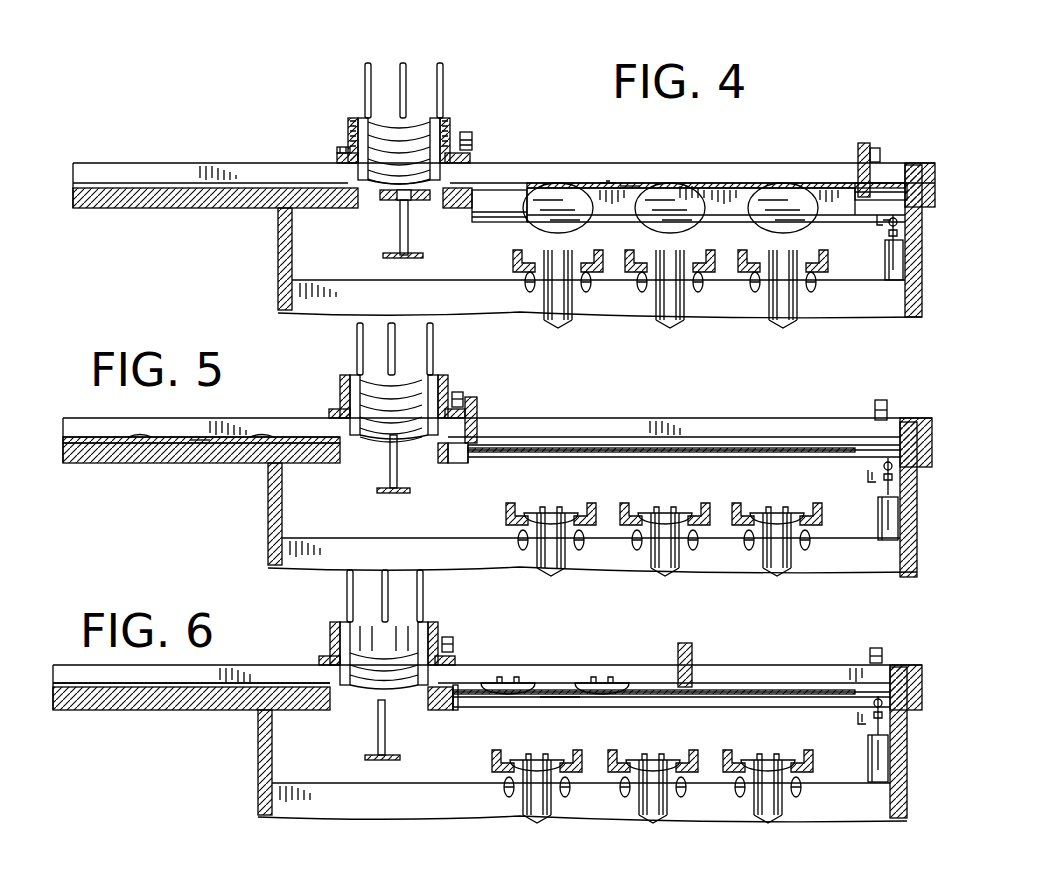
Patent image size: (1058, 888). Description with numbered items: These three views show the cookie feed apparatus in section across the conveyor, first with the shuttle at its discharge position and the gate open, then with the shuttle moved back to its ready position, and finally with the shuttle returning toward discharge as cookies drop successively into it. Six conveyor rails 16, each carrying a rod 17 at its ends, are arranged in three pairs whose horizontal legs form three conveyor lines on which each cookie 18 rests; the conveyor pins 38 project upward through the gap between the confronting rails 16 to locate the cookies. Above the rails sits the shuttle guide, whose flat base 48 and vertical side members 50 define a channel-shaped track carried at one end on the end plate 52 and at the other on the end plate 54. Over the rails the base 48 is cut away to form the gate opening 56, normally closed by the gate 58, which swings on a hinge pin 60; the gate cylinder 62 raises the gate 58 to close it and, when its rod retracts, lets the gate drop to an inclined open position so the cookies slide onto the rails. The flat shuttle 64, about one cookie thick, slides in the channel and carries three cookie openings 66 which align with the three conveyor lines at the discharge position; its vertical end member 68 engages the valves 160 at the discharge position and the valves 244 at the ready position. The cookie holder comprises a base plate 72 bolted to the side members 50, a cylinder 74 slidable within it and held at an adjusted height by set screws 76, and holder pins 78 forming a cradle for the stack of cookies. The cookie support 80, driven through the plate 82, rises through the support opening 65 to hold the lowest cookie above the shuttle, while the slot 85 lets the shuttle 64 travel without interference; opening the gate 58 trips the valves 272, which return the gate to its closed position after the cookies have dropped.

In FIG. 4, the conveyor rails 16 is at (513, 262).
In FIG. 5, the conveyor rails 16 is at (506, 514).
In FIG. 6, the conveyor rails 16 is at (492, 754).
In FIG. 4, the rods 17 is at (603, 283).
In FIG. 5, the rods 17 is at (606, 546).
In FIG. 6, the rods 17 is at (506, 790).
In FIG. 4, the cookie 18 is at (392, 124).
In FIG. 5, the cookie 18 is at (553, 513).
In FIG. 6, the cookie 18 is at (380, 662).
In FIG. 4, the conveyor pins 38 is at (558, 329).
In FIG. 5, the conveyor pins 38 is at (551, 576).
In FIG. 6, the conveyor pins 38 is at (528, 810).
In FIG. 4, the base 48 is at (159, 208).
In FIG. 5, the base 48 is at (136, 463).
In FIG. 6, the base 48 is at (140, 710).
In FIG. 4, the side members 50 is at (176, 162).
In FIG. 5, the side members 50 is at (296, 428).
In FIG. 6, the side members 50 is at (487, 687).
In FIG. 4, the end plate 52 is at (915, 318).
In FIG. 5, the end plate 52 is at (917, 516).
In FIG. 6, the end plate 52 is at (908, 732).
In FIG. 4, the end plate 54 is at (278, 245).
In FIG. 5, the end plate 54 is at (268, 518).
In FIG. 6, the end plate 54 is at (258, 755).
In FIG. 4, the gate opening 56 is at (487, 190).
In FIG. 5, the gate opening 56 is at (462, 464).
In FIG. 6, the gate opening 56 is at (456, 710).
In FIG. 4, the gate 58 is at (836, 190).
In FIG. 5, the gate 58 is at (760, 447).
In FIG. 6, the gate 58 is at (742, 690).
In FIG. 4, the hinge pin 60 is at (880, 184).
In FIG. 4, the gate cylinder 62 is at (886, 270).
In FIG. 5, the gate cylinder 62 is at (900, 506).
In FIG. 6, the gate cylinder 62 is at (892, 760).
In FIG. 4, the shuttle 64 is at (524, 184).
In FIG. 5, the shuttle 64 is at (78, 437).
In FIG. 6, the shuttle 64 is at (256, 683).
In FIG. 4, the support opening 65 is at (382, 200).
In FIG. 4, the cookie openings 66 is at (608, 184).
In FIG. 5, the cookie openings 66 is at (140, 437).
In FIG. 6, the cookie openings 66 is at (512, 694).
In FIG. 4, the end member 68 is at (864, 143).
In FIG. 5, the end member 68 is at (478, 402).
In FIG. 6, the end member 68 is at (692, 650).
In FIG. 4, the base plate 72 is at (338, 150).
In FIG. 4, the cylinder 74 is at (447, 122).
In FIG. 5, the cylinder 74 is at (445, 378).
In FIG. 6, the cylinder 74 is at (435, 626).
In FIG. 4, the set screws 76 is at (350, 130).
In FIG. 4, the holder pins 78 is at (441, 68).
In FIG. 5, the holder pins 78 is at (388, 345).
In FIG. 6, the holder pins 78 is at (382, 592).
In FIG. 4, the cookie support 80 is at (409, 212).
In FIG. 5, the cookie support 80 is at (389, 450).
In FIG. 6, the cookie support 80 is at (377, 710).
In FIG. 4, the plate 82 is at (423, 256).
In FIG. 5, the plate 82 is at (398, 493).
In FIG. 6, the plate 82 is at (400, 760).
In FIG. 4, the slot 85 is at (626, 188).
In FIG. 5, the slot 85 is at (205, 443).
In FIG. 6, the slot 85 is at (562, 698).
In FIG. 4, the air actuated valves 160 is at (876, 148).
In FIG. 5, the air actuated valves 160 is at (883, 400).
In FIG. 6, the air actuated valves 160 is at (878, 648).
In FIG. 4, the air actuated valves 244 is at (470, 134).
In FIG. 5, the air actuated valves 244 is at (463, 396).
In FIG. 6, the air actuated valves 244 is at (453, 640).
In FIG. 4, the air actuated valves 272 is at (900, 232).
In FIG. 5, the air actuated valves 272 is at (882, 493).
In FIG. 6, the air actuated valves 272 is at (868, 730).